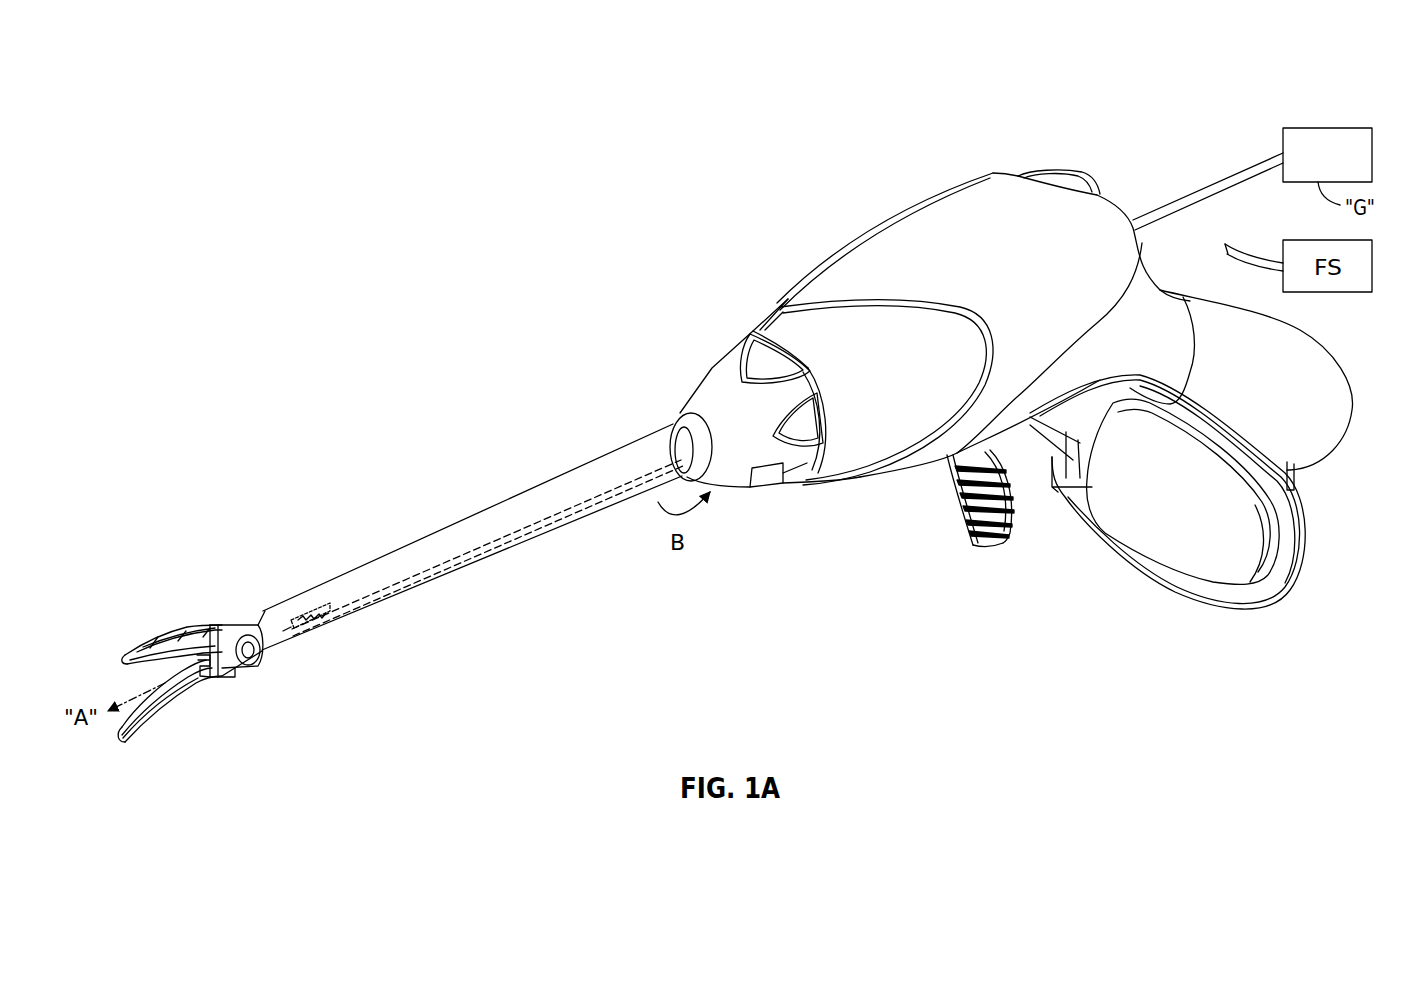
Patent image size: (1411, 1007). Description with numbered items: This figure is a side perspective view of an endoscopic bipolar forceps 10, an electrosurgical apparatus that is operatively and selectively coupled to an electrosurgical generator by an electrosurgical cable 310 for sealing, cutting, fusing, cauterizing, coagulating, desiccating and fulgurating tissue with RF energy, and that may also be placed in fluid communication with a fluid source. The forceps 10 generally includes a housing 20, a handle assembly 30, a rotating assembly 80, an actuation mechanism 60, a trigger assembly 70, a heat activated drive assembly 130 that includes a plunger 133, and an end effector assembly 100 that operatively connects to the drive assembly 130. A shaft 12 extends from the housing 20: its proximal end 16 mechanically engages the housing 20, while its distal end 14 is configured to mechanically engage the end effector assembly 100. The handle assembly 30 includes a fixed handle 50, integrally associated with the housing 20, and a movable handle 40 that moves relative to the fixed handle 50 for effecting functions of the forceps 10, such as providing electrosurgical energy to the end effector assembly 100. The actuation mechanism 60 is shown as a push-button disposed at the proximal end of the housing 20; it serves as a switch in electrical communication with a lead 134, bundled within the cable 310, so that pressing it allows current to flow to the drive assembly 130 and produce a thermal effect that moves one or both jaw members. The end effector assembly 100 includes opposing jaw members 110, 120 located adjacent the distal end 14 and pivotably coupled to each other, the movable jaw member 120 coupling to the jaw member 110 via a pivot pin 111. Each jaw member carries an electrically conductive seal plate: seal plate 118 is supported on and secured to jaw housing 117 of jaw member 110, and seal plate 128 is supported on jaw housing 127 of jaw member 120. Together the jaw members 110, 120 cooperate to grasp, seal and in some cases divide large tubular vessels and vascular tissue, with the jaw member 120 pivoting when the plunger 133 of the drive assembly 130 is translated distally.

The bipolar forceps 10 is at (828, 228).
The shaft 12 is at (478, 555).
The distal end 14 is at (264, 612).
The proximal end 16 is at (656, 436).
The housing 20 is at (1130, 212).
The handle assembly 30 is at (1250, 630).
The movable handle 40 is at (1290, 592).
The fixed handle 50 is at (1330, 378).
The actuation mechanism 60 is at (1082, 168).
The trigger assembly 70 is at (937, 508).
The rotating assembly 80 is at (722, 350).
The end effector assembly 100 is at (208, 605).
The jaw member 110 is at (172, 705).
The pivot pin 111 is at (261, 657).
The jaw housing 117 is at (230, 692).
The seal plate 118 is at (142, 727).
The jaw member 120 is at (126, 656).
The jaw housing 127 is at (232, 669).
The seal plate 128 is at (136, 672).
The heat activated drive assembly 130 is at (320, 607).
The plunger 133 is at (280, 630).
The lead 134 is at (534, 530).
The electrosurgical cable 310 is at (1205, 185).